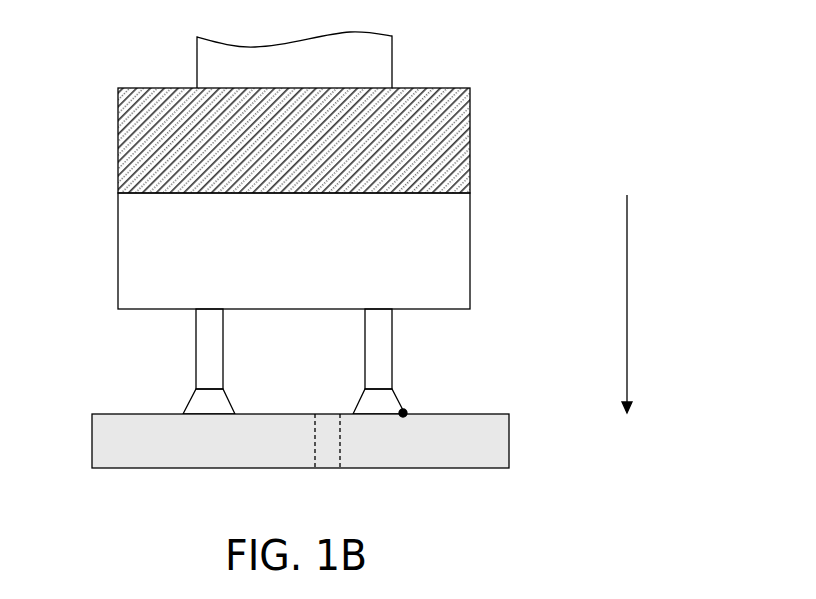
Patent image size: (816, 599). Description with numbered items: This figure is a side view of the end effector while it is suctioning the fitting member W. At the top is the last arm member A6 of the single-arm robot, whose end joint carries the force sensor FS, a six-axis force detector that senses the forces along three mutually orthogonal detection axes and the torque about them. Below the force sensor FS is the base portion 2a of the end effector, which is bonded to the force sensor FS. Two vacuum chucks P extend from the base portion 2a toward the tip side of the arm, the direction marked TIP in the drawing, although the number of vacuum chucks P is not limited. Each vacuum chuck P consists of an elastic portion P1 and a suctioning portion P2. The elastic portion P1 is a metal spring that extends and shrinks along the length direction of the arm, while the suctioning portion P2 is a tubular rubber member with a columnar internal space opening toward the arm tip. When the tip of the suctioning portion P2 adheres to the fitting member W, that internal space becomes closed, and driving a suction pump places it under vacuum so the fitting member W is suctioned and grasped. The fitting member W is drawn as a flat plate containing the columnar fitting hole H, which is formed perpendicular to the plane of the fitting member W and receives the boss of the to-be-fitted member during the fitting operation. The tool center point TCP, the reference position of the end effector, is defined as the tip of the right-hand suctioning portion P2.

The arm member A6 is at (352, 57).
The force sensor FS is at (350, 140).
The base portion 2a is at (347, 251).
The vacuum chuck P is at (293, 361).
The elastic portion P1 is at (293, 349).
The suctioning portion P2 is at (293, 389).
The fitting member W is at (275, 465).
The fitting hole H is at (336, 448).
The tool center point TCP is at (468, 404).
The tip direction TIP is at (626, 320).